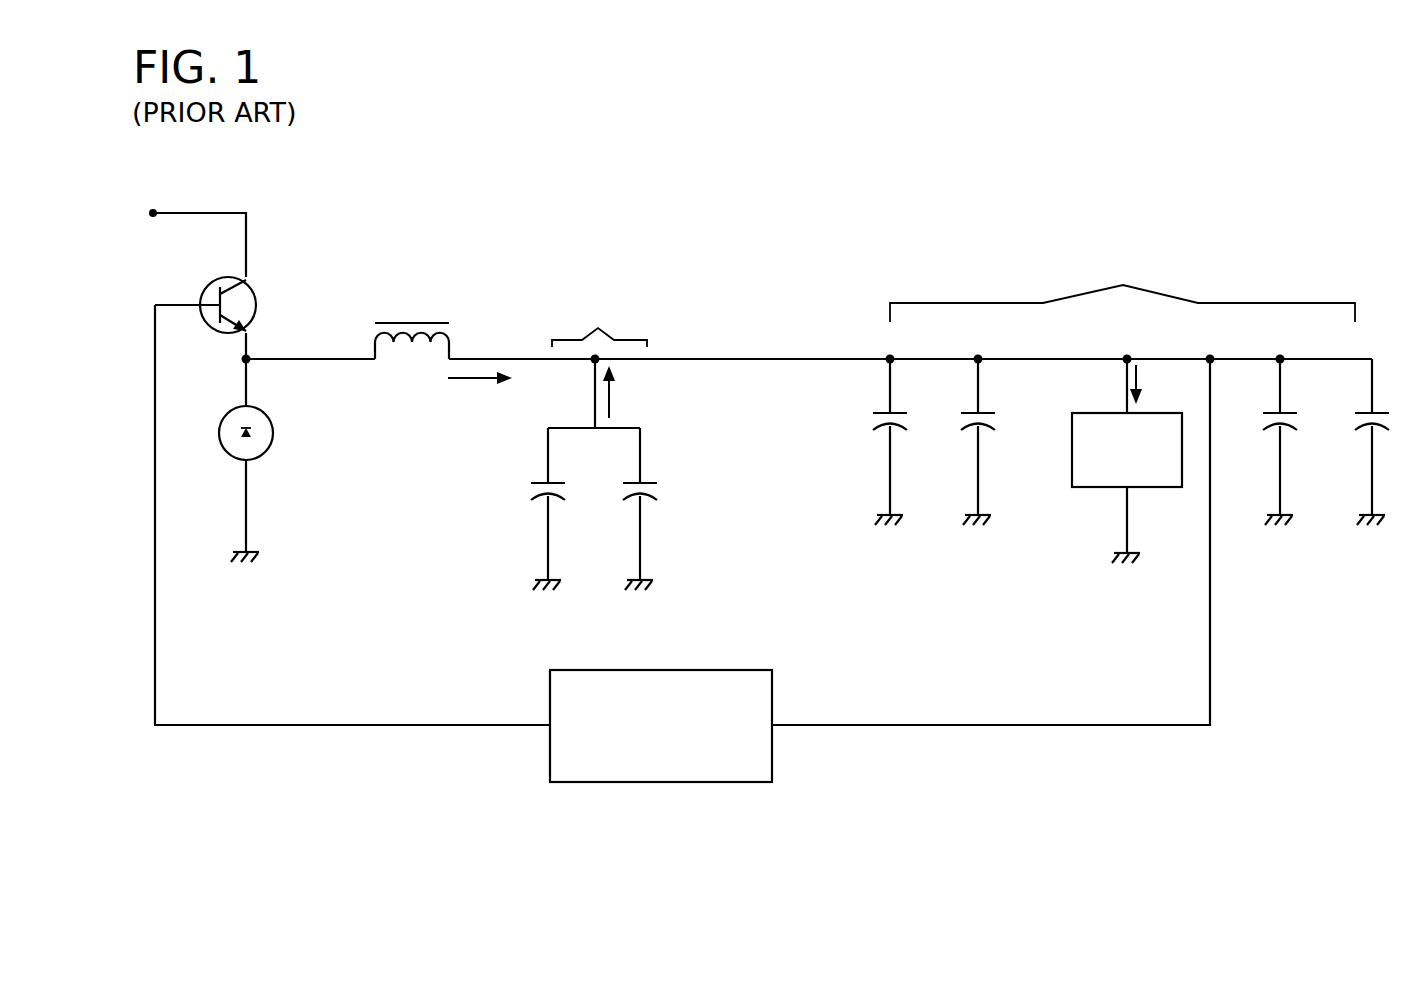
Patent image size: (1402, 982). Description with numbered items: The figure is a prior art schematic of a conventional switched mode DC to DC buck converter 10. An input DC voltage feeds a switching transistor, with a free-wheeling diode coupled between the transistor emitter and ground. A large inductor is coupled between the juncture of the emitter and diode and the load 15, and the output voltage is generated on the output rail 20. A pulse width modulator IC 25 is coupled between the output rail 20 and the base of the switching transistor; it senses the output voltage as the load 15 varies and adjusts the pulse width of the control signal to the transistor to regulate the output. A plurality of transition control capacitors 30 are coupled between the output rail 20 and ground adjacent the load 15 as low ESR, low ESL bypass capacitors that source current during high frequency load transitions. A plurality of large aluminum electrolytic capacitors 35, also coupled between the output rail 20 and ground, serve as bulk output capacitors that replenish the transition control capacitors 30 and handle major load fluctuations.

The converter 10 is at (736, 202).
The load 15 is at (1114, 412).
The output rail 20 is at (795, 358).
The pulse width modulator IC 25 is at (625, 670).
The transition control capacitors 30 is at (886, 412).
The capacitors 35 is at (545, 481).